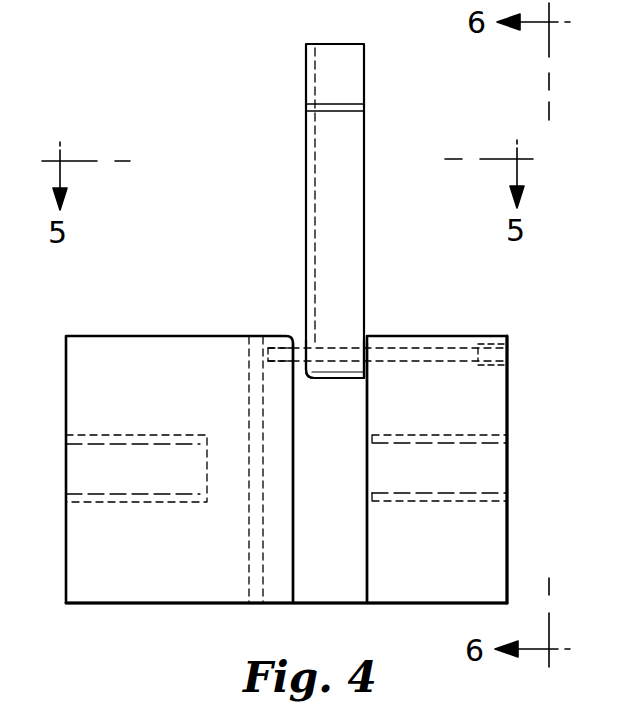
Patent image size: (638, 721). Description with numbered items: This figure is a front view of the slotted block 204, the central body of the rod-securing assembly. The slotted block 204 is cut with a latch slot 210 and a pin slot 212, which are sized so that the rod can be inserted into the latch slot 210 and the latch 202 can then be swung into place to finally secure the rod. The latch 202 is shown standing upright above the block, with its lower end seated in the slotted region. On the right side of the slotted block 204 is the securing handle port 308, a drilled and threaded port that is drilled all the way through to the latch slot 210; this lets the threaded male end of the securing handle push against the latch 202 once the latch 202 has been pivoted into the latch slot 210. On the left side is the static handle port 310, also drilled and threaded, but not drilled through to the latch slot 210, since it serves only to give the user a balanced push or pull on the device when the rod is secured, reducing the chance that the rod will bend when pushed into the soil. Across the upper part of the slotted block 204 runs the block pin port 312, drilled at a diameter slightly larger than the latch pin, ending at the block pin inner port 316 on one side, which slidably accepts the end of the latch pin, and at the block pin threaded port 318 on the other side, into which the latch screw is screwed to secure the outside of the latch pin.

The latch 202 is at (306, 177).
The slotted block 204 is at (218, 604).
The latch slot 210 is at (328, 583).
The pin slot 212 is at (303, 338).
The securing handle port 308 is at (470, 500).
The static handle port 310 is at (108, 505).
The block pin port 312 is at (437, 338).
The block pin inner port 316 is at (277, 338).
The block pin threaded port 318 is at (492, 368).